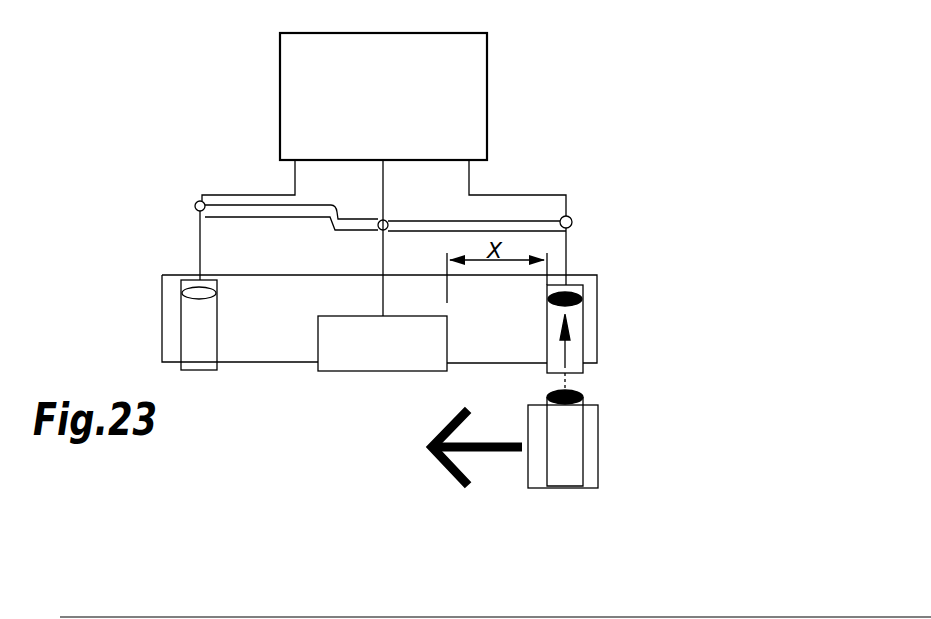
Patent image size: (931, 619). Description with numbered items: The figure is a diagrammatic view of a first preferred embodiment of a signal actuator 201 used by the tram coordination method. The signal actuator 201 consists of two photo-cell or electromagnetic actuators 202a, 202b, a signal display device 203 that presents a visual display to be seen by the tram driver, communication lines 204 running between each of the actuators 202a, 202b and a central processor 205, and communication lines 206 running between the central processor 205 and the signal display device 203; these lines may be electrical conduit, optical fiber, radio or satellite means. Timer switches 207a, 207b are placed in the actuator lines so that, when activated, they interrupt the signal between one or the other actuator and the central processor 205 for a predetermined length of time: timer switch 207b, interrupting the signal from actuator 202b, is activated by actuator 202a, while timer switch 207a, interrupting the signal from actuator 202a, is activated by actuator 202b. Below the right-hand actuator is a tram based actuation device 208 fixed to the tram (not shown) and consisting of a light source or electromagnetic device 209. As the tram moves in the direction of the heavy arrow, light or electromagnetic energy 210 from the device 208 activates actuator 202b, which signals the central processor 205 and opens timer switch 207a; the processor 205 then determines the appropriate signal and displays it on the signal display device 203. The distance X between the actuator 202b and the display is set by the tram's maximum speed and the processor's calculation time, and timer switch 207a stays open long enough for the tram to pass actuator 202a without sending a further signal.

The signal actuator 201 is at (182, 268).
The photo-cell or electromagnetic actuator 202a is at (188, 293).
The photo-cell or electromagnetic actuator 202b is at (586, 297).
The signal display device 203 is at (355, 373).
The communication lines 204 is at (247, 194).
The central processor 205 is at (487, 75).
The communication lines 206 is at (388, 199).
The timer switch 207a is at (196, 203).
The timer switch 207b is at (573, 218).
The tram based actuation device 208 is at (601, 450).
The light source or electromagnetic device 209 is at (586, 396).
The light or electromagnetic energy 210 is at (571, 350).